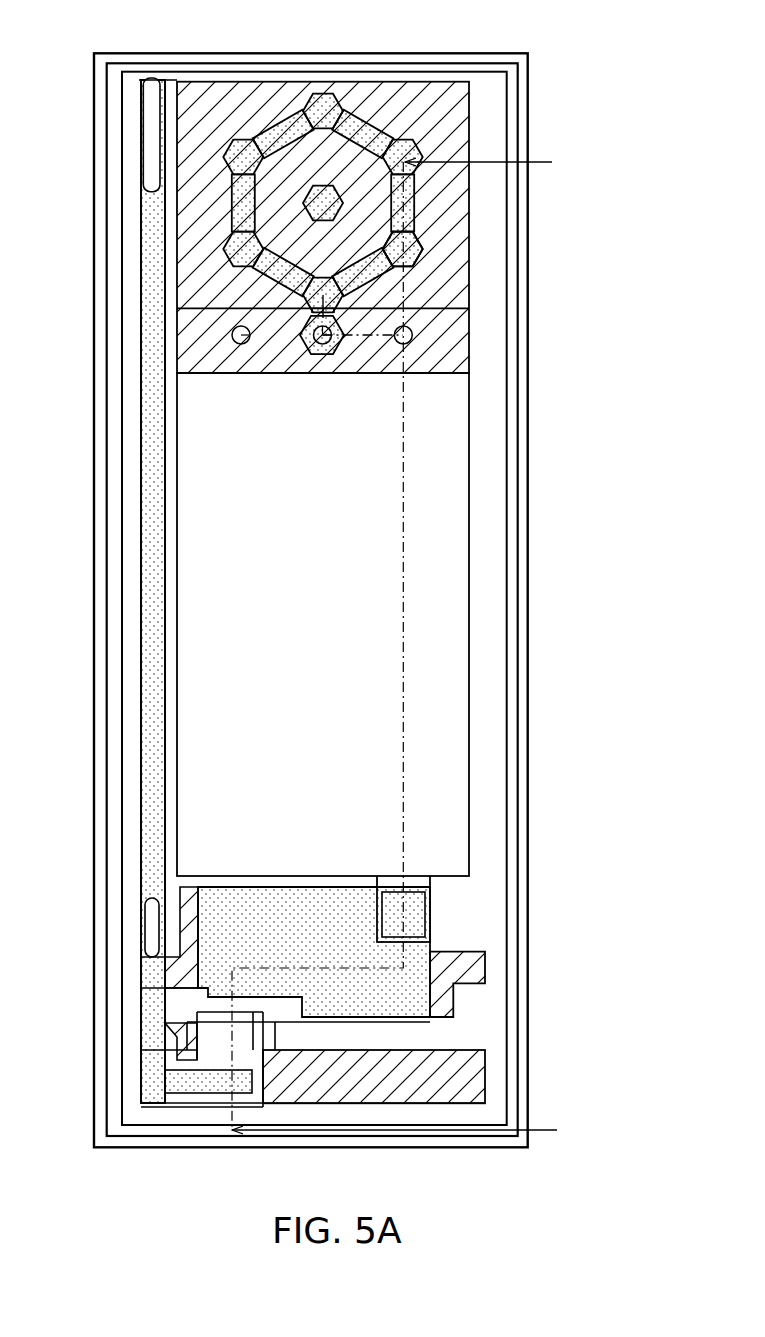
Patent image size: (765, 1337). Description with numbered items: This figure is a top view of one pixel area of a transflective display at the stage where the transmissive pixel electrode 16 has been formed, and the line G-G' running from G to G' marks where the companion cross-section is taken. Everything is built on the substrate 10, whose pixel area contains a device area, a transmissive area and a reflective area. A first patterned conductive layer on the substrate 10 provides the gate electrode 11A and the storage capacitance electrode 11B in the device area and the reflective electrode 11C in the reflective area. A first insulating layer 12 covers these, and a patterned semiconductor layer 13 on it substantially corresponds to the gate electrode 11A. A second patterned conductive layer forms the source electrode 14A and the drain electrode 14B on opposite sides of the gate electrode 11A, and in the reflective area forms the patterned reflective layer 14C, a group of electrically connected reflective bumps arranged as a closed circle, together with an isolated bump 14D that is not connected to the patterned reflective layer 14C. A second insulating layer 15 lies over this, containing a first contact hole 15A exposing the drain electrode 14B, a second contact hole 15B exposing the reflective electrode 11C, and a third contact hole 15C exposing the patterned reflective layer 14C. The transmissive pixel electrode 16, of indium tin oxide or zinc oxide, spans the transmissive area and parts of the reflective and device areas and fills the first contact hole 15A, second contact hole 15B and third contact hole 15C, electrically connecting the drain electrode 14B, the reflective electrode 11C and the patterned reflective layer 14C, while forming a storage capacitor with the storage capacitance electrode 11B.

The substrate 10 is at (523, 90).
The first insulating layer 12 is at (515, 112).
The second insulating layer 15 is at (497, 238).
The patterned semiconductor layer 13 is at (177, 112).
The reflective electrode 11C is at (463, 205).
The isolated bump 14D is at (334, 198).
The patterned reflective layer 14C is at (413, 257).
The second contact hole 15B is at (232, 334).
The third contact hole 15C is at (303, 343).
The transmissive pixel electrode 16 is at (455, 597).
The section line end G' is at (403, 640).
The section line end G is at (403, 1131).
The drain electrode 14B is at (422, 949).
The first contact hole 15A is at (418, 909).
The storage capacitance electrode 11B is at (482, 968).
The gate electrode 11A is at (480, 1068).
The source electrode 14A is at (205, 1085).